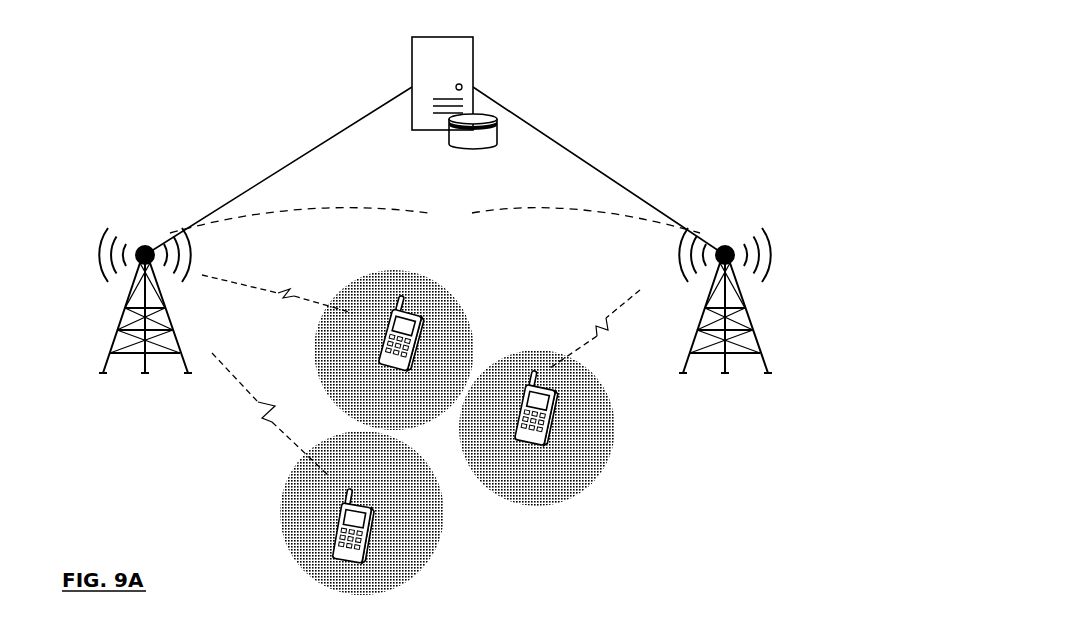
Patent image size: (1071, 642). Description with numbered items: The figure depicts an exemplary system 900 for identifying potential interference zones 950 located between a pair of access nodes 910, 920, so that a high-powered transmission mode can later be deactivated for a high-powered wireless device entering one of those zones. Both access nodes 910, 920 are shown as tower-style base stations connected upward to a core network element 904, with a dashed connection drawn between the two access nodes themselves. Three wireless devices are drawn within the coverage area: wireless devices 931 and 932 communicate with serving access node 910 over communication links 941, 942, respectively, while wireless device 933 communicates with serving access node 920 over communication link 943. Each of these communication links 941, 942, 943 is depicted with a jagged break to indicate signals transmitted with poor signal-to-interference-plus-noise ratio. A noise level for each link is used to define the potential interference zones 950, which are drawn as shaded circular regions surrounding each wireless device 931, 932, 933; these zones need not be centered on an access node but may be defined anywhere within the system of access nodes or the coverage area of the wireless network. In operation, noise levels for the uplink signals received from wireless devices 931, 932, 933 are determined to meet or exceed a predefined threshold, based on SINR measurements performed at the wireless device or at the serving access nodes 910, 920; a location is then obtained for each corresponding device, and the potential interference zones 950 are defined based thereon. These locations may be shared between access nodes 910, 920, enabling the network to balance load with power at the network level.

The system 900 is at (640, 37).
The core network (CN) 904 is at (473, 60).
The access node 910 is at (128, 330).
The access node 920 is at (753, 342).
The wireless device 931 is at (385, 355).
The wireless device 932 is at (365, 562).
The wireless device 933 is at (528, 440).
The communication link 941 is at (298, 305).
The communication link 942 is at (278, 437).
The communication link 943 is at (600, 326).
The potential interference zone 950 is at (421, 409).